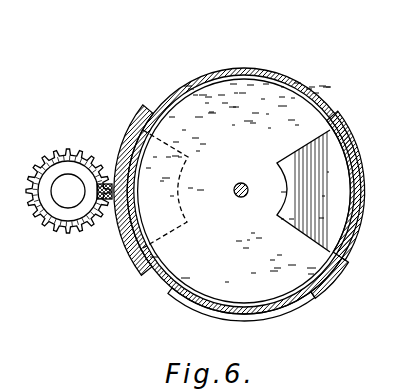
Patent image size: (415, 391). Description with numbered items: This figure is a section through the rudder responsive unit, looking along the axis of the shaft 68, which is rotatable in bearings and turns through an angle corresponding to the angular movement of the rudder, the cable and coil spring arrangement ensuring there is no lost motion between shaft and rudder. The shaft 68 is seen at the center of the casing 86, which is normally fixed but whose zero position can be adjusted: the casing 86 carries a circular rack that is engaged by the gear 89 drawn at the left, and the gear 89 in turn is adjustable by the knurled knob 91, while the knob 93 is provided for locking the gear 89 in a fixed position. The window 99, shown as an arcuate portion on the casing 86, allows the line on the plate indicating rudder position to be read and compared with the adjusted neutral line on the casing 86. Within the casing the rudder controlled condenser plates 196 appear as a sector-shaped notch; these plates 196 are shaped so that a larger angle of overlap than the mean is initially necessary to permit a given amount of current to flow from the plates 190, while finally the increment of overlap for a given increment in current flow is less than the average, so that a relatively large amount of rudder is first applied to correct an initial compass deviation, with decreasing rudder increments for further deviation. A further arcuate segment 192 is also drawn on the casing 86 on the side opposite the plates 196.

The casing 86 is at (300, 80).
The shaft 68 is at (237, 199).
The arcuate segment 192 is at (168, 232).
The rudder controlled condenser plates 196 is at (341, 155).
The plates 190 is at (287, 303).
The window 99 is at (182, 307).
The gear 89 is at (48, 224).
The knurled knob 91 is at (72, 182).
The knob 93 is at (80, 176).